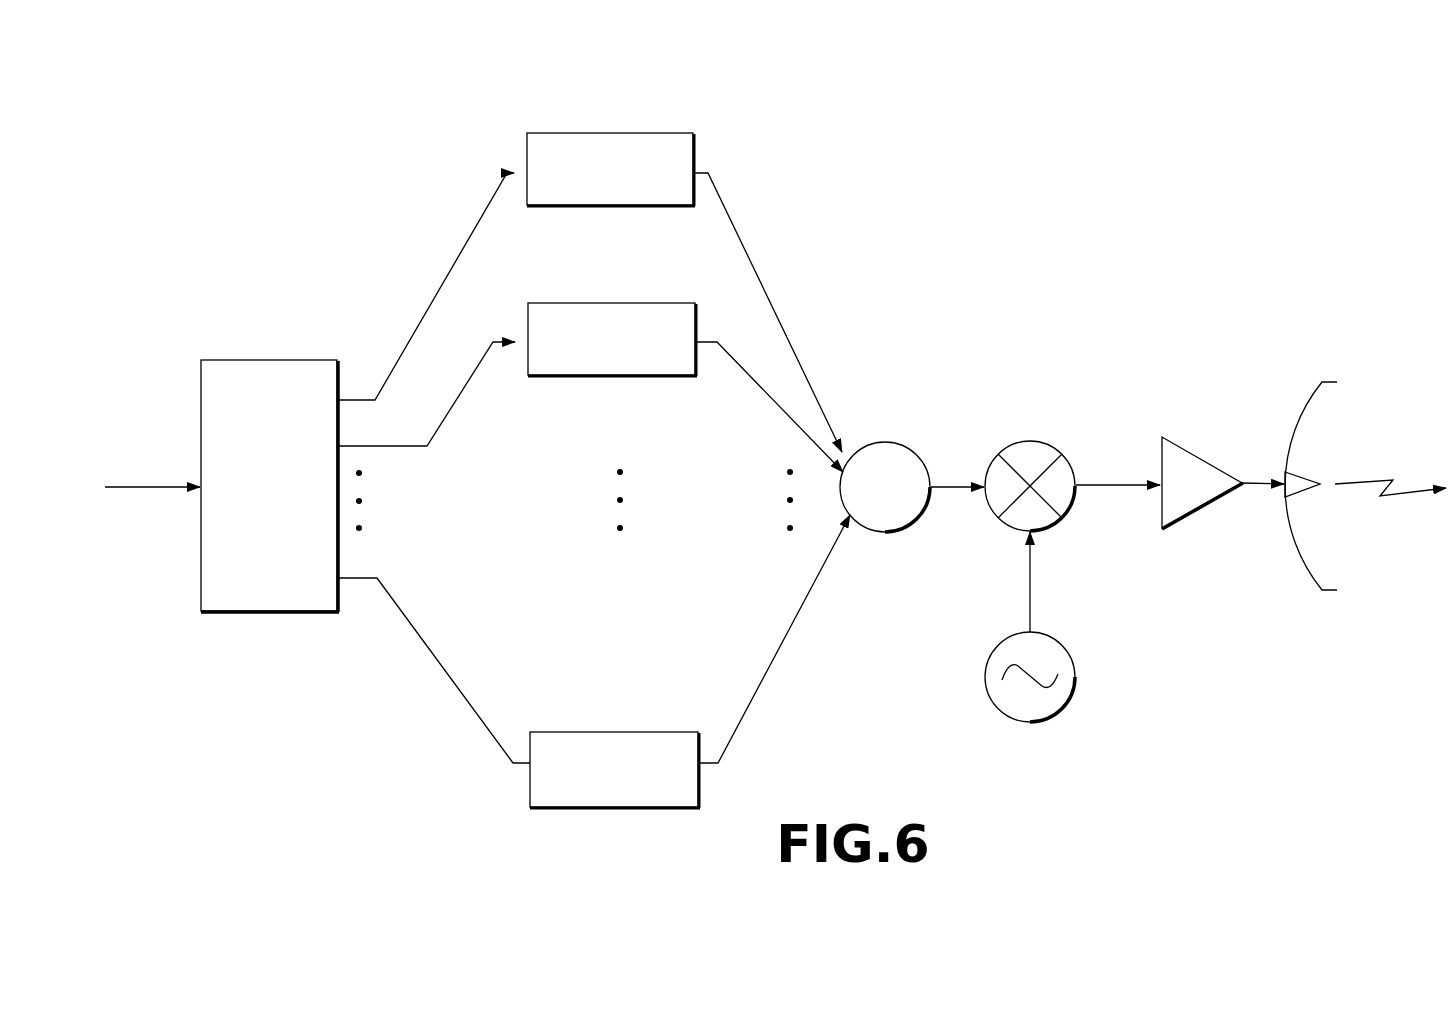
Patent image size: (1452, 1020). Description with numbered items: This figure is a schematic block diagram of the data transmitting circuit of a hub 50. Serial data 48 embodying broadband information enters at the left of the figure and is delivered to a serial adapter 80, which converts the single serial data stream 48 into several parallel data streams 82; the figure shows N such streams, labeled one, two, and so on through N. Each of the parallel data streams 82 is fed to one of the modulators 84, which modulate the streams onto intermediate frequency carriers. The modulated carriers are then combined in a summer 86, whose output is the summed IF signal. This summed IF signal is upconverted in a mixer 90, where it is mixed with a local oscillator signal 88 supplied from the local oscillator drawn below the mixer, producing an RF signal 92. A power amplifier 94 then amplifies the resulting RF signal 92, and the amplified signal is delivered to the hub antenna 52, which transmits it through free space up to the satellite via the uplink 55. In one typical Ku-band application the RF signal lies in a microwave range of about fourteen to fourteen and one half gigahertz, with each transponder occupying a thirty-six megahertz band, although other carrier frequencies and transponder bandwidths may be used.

The hub 50 is at (336, 130).
The serial data 48 is at (118, 485).
The serial adapter 80 is at (302, 360).
The parallel data streams 82 is at (482, 218).
The modulators 84 is at (662, 133).
The summer 86 is at (905, 443).
The mixer 90 is at (1048, 443).
The RF signal 92 is at (1093, 483).
The local oscillator signal 88 is at (1050, 632).
The power amplifier 94 is at (1180, 440).
The hub antenna 52 is at (1327, 380).
The uplink 55 is at (1367, 477).